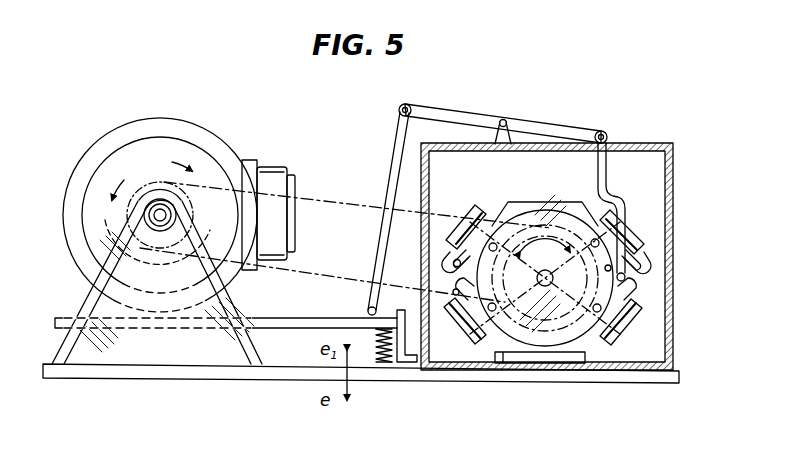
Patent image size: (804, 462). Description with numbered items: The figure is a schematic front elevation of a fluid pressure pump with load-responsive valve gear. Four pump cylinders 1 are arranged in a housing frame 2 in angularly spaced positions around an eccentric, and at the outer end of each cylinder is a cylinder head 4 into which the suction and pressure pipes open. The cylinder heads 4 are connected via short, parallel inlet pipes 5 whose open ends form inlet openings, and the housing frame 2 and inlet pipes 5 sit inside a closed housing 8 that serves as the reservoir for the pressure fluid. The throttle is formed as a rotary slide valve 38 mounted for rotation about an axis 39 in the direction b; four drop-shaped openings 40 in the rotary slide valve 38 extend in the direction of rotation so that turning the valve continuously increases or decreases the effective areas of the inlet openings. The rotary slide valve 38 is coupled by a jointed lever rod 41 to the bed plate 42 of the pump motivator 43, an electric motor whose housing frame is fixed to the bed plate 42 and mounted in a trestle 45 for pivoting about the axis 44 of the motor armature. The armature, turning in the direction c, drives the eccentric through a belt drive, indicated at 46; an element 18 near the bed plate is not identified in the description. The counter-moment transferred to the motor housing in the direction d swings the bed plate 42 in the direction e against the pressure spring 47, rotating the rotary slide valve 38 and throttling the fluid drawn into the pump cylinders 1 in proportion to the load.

The pump cylinder 1 is at (500, 212).
The housing frame 2 is at (500, 342).
The cylinder head 4 is at (468, 212).
The inlet pipe 5 is at (452, 262).
The closed housing 8 is at (673, 173).
The bracket 18 is at (398, 310).
The rotary slide valve 38 is at (547, 346).
The axis 39 is at (546, 284).
The drop-shaped opening 40 is at (622, 226).
The jointed lever rod 41 is at (558, 128).
The bed plate 42 is at (302, 318).
The pump motivator 43 is at (223, 153).
The axis 44 is at (160, 221).
The trestle 45 is at (148, 346).
The belt 46 is at (336, 203).
The pressure spring 47 is at (386, 364).